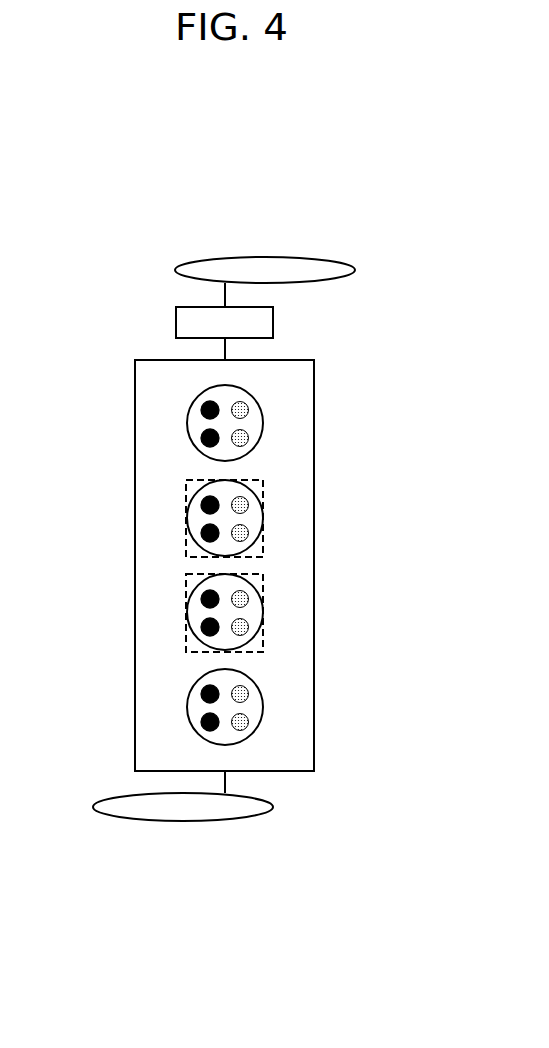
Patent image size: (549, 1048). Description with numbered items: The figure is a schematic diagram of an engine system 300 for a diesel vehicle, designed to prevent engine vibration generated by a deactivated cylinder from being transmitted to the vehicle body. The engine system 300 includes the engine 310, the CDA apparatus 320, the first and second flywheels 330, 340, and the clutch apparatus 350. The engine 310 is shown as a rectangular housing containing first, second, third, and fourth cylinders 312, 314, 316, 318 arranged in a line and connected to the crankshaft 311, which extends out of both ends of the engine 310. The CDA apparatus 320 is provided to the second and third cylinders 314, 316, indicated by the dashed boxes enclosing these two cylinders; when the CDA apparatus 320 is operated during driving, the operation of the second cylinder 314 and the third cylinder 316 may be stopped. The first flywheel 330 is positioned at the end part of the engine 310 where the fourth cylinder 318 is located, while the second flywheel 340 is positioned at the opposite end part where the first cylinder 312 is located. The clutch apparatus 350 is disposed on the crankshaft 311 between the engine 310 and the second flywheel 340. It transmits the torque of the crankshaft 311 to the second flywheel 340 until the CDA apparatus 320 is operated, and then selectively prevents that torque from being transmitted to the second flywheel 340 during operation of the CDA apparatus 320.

The engine system 300 is at (320, 215).
The engine 310 is at (314, 424).
The crankshaft 311 is at (222, 295).
The first cylinder 312 is at (188, 423).
The second cylinder 314 is at (187, 488).
The third cylinder 316 is at (187, 584).
The fourth cylinder 318 is at (188, 705).
The CDA apparatus 320 is at (263, 543).
The first flywheel 330 is at (180, 821).
The second flywheel 340 is at (355, 270).
The clutch apparatus 350 is at (273, 322).